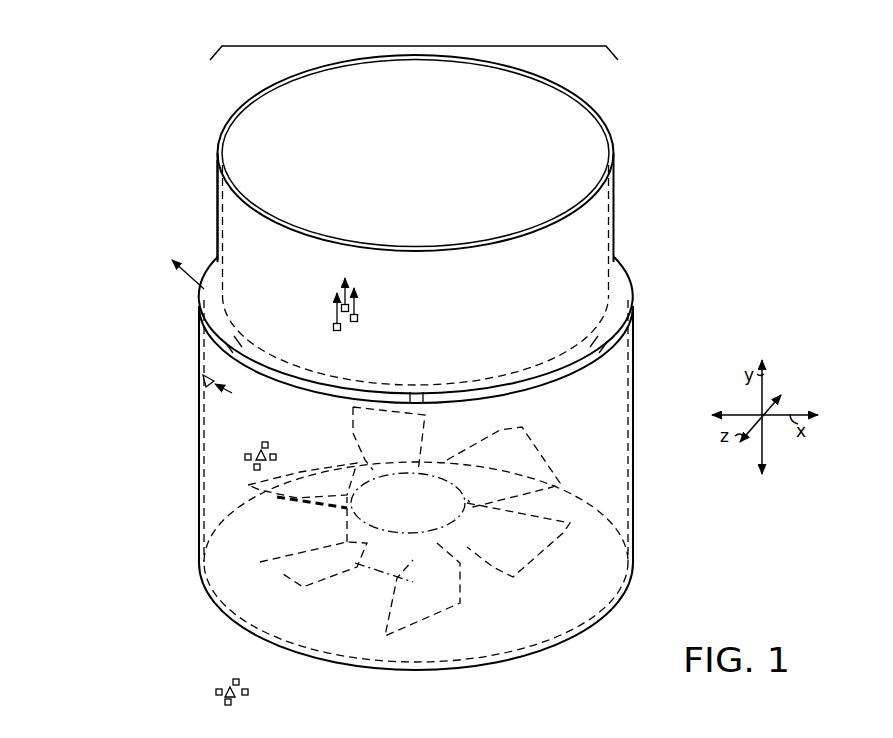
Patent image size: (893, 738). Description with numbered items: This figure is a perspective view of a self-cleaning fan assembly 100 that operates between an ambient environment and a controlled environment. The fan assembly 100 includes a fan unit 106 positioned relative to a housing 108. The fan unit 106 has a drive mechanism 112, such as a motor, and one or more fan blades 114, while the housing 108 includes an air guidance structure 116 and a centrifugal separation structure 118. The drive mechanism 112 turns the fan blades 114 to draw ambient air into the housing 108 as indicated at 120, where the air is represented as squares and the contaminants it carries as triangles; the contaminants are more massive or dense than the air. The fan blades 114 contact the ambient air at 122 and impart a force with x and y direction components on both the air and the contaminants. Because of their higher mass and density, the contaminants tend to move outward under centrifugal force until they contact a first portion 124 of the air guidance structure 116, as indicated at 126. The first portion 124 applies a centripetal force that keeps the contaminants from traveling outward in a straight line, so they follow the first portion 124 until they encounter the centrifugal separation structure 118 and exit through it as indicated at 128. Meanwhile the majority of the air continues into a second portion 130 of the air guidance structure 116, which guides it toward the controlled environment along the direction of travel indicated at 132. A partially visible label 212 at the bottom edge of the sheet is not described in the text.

The self-cleaning fan assembly 100 is at (416, 340).
The fan unit 106 is at (429, 520).
The housing 108 is at (601, 110).
The drive mechanism 112 is at (440, 524).
The fan blades 114 is at (488, 565).
The air guidance structure 116 is at (456, 46).
The centrifugal separation structure 118 is at (617, 253).
The ambient air drawn into housing 120 is at (261, 654).
The fan blade contact with ambient air 122 is at (277, 446).
The first portion of air guidance structure 124 is at (329, 485).
The contaminant contact with first portion 126 is at (245, 390).
The contaminant exit 128 is at (166, 276).
The second portion of air guidance structure 130 is at (217, 208).
The direction of travel 132 is at (377, 304).
The central axis 212 is at (501, 735).